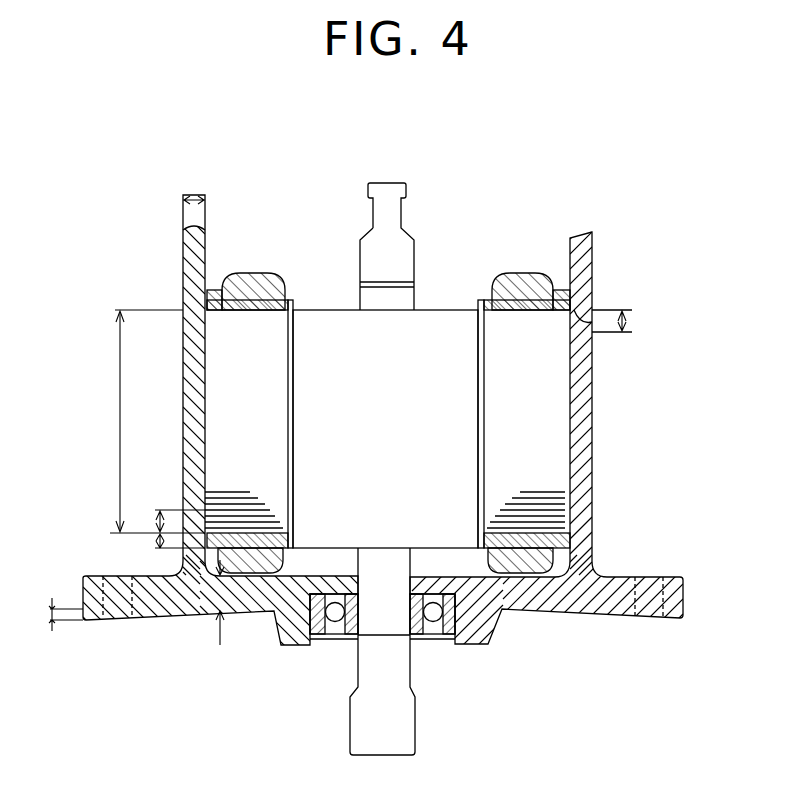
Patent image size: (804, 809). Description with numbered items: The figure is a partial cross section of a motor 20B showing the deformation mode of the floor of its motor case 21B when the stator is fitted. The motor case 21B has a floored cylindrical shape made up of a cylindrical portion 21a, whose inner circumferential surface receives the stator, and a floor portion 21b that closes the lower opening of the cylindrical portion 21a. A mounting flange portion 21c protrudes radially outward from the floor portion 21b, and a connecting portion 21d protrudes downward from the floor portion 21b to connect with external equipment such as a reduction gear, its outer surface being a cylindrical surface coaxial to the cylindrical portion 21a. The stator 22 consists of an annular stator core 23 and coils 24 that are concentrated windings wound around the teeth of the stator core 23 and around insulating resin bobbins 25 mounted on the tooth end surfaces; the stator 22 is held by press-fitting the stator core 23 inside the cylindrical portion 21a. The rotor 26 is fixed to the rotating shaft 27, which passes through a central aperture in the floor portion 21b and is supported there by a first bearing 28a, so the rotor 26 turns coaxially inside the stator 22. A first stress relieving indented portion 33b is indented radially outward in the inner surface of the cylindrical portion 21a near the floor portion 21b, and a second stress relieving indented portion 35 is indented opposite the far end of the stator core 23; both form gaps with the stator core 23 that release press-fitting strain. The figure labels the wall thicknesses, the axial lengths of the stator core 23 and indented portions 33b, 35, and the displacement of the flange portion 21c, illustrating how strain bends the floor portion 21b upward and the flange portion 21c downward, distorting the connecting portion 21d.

The motor 20B is at (152, 188).
The motor case 21B is at (390, 447).
The cylindrical portion 21a is at (586, 492).
The floor portion 21b is at (545, 608).
The mounting flange portion 21c is at (650, 616).
The connecting portion 21d is at (488, 632).
The stator 22 is at (530, 270).
The stator core 23 is at (291, 328).
The coils 24 is at (262, 284).
The bobbins 25 is at (216, 294).
The rotor 26 is at (440, 318).
The rotating shaft 27 is at (406, 235).
The first bearing 28a is at (455, 640).
The first stress relieving indented portion 33b is at (588, 535).
The second stress relieving indented portion 35 is at (580, 318).